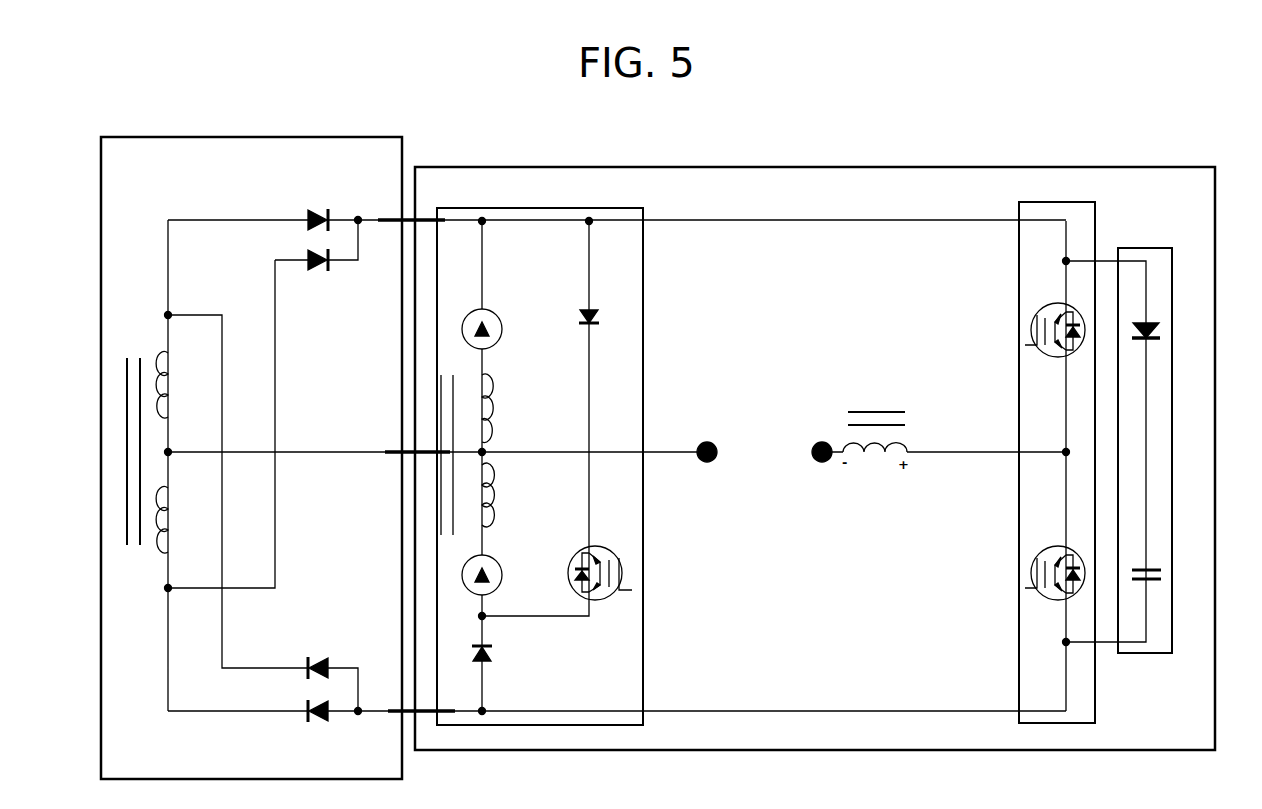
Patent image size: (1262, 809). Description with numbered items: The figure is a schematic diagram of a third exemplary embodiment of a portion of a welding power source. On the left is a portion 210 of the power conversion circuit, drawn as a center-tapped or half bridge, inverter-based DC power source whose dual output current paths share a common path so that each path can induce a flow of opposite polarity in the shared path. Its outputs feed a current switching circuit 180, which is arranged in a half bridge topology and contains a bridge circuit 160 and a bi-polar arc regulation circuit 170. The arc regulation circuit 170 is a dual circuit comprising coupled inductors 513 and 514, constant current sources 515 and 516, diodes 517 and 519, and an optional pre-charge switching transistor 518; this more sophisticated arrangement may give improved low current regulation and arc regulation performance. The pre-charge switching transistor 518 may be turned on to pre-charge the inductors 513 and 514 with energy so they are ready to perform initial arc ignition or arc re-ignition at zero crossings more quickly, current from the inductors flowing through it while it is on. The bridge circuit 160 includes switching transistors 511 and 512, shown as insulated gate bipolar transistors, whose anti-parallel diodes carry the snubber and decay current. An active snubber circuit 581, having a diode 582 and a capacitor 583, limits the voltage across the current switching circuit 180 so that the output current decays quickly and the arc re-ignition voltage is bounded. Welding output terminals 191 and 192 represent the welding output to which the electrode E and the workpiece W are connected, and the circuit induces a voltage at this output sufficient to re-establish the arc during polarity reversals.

The portion of the power conversion circuit 210 is at (143, 137).
The current switching circuit 180 is at (884, 167).
The arc regulation circuit 170 is at (553, 208).
The bridge circuit 160 is at (1034, 202).
The active snubber circuit 581 is at (1138, 248).
The diode 582 is at (1150, 330).
The capacitor 583 is at (1153, 568).
The switching transistor 511 is at (1049, 306).
The switching transistor 512 is at (1050, 549).
The coupled inductor 513 is at (482, 397).
The coupled inductor 514 is at (487, 479).
The constant current source 515 is at (486, 308).
The constant current source 516 is at (497, 554).
The diode 517 is at (582, 310).
The pre-charge switching transistor 518 is at (602, 547).
The diode 519 is at (490, 648).
The welding output terminal 191 is at (815, 447).
The welding output terminal 192 is at (715, 455).